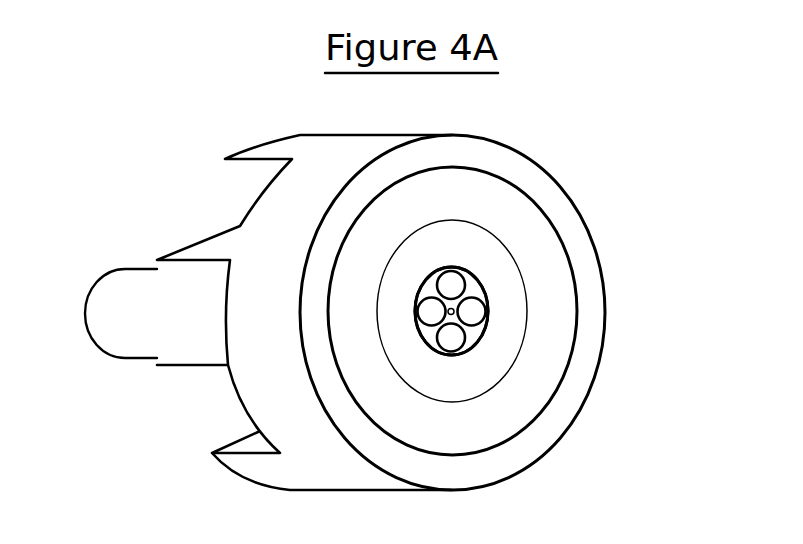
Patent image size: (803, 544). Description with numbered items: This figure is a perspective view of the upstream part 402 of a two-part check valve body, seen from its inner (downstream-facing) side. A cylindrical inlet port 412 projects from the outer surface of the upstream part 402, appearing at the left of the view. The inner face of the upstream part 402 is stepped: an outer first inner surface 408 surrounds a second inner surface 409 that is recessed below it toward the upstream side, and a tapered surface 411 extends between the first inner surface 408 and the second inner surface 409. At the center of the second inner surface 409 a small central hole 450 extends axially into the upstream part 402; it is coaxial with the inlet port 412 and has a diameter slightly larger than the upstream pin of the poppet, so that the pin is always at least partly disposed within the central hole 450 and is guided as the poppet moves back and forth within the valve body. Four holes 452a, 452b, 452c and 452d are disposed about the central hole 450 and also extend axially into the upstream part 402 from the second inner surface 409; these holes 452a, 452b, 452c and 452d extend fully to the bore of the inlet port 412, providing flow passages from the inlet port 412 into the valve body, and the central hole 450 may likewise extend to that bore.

The upstream part 402 is at (533, 135).
The first inner surface 408 is at (554, 326).
The second inner surface 409 is at (473, 333).
The tapered surface 411 is at (473, 248).
The inlet port 412 is at (138, 269).
The central hole 450 is at (441, 303).
The hole 452a is at (468, 277).
The hole 452b is at (486, 312).
The hole 452c is at (478, 347).
The hole 452d is at (426, 327).